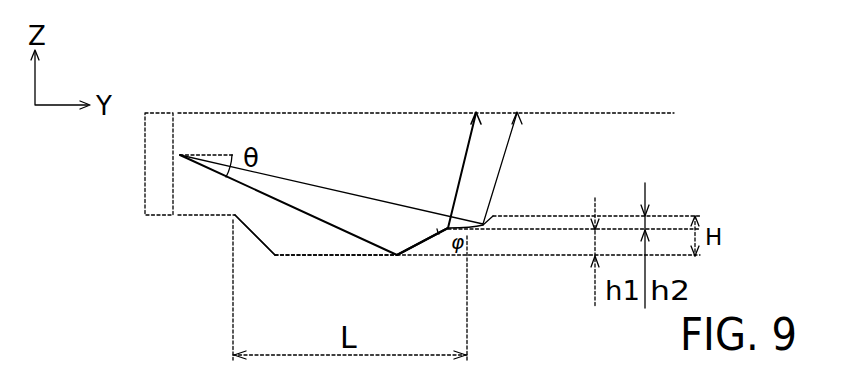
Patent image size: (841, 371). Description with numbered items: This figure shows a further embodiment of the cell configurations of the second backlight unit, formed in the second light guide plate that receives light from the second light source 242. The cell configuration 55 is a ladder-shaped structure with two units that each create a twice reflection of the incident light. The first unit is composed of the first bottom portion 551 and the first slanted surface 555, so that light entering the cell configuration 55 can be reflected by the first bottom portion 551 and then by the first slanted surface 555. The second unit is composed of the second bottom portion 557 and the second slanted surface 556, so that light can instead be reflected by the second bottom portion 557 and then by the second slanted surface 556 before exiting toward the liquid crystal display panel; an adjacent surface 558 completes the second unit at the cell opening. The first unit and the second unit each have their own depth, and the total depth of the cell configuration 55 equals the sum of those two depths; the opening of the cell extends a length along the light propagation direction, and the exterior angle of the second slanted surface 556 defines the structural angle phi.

The second light source 242 is at (157, 216).
The cell configuration 55 is at (246, 228).
The first slanted surface 555 is at (250, 238).
The first bottom portion 551 is at (308, 262).
The second slanted surface 556 is at (440, 243).
The second bottom portion 557 is at (473, 229).
The third surface 558 is at (487, 231).